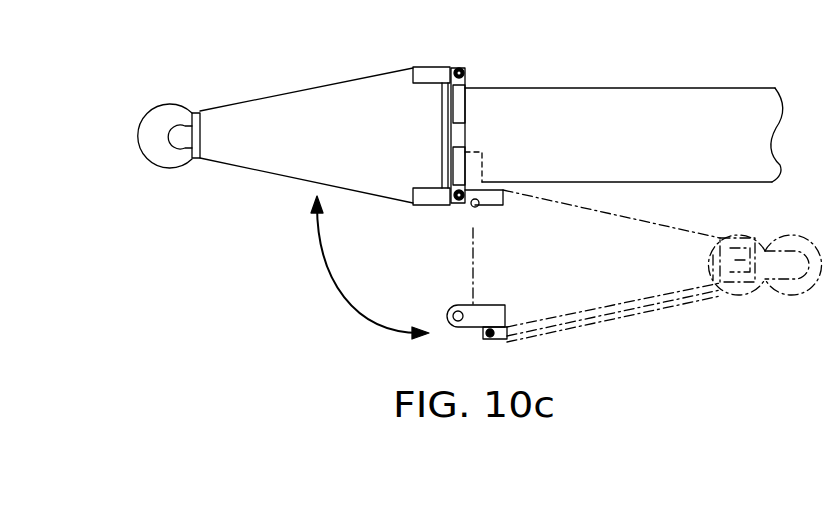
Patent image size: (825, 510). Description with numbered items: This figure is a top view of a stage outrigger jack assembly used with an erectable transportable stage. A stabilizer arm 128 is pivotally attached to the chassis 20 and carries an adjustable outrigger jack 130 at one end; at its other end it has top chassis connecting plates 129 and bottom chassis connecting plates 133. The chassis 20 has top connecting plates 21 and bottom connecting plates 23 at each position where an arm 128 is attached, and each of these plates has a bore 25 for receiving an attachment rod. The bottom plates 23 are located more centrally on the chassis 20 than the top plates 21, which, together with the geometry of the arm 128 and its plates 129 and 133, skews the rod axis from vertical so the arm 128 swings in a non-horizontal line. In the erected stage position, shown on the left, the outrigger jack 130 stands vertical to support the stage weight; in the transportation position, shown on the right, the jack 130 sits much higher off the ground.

The chassis 20 is at (683, 88).
The top connecting plates 21 is at (468, 110).
The bottom connecting plates 23 is at (485, 178).
The bore 25 is at (465, 71).
The stabilizer arm 128 is at (340, 82).
The top chassis connecting plates 129 is at (433, 66).
The outrigger jack 130 is at (174, 170).
The bottom chassis connecting plates 133 is at (477, 216).